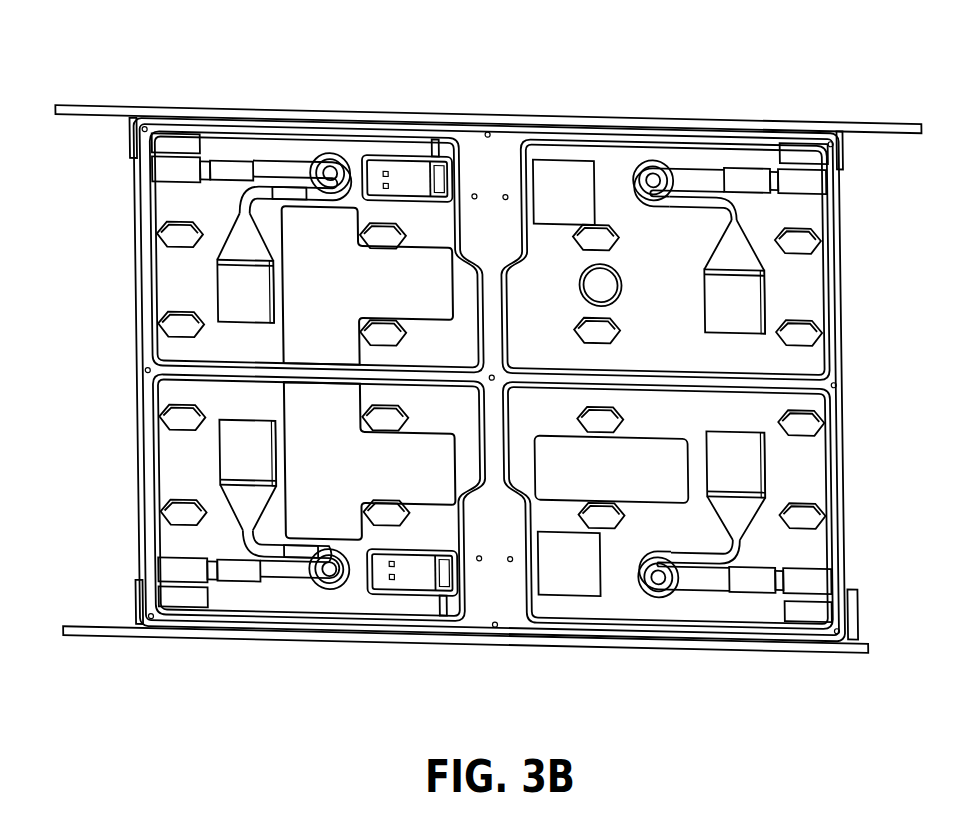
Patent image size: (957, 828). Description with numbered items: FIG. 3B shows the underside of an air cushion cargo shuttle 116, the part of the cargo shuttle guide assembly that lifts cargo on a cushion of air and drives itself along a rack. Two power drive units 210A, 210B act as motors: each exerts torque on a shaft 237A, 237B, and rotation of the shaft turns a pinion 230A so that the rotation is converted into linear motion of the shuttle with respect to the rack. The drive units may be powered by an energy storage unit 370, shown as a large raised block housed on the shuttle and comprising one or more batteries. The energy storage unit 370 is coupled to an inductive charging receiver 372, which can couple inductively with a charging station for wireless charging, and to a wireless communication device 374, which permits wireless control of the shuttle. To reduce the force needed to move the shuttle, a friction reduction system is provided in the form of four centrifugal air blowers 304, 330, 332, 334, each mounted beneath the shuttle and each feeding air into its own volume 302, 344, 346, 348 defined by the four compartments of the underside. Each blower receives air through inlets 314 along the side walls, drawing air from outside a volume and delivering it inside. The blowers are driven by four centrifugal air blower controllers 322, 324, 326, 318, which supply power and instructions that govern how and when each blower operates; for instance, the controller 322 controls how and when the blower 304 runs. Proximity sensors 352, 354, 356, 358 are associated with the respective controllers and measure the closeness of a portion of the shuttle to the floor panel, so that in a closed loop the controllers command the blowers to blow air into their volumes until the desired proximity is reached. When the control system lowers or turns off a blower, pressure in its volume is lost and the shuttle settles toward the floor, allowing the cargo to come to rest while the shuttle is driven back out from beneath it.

The air cushion cargo shuttle 116 is at (808, 484).
The power drive unit 210A is at (402, 178).
The power drive unit 210B is at (402, 573).
The pinion 230A is at (430, 112).
The shaft 237A is at (437, 140).
The shaft 237B is at (453, 603).
The volume 302 is at (608, 578).
The centrifugal air blower 304 is at (665, 595).
The inlets 314 is at (135, 183).
The centrifugal air blower controller 318 is at (745, 300).
The centrifugal air blower controller 322 is at (750, 442).
The centrifugal air blower controller 324 is at (245, 288).
The centrifugal air blower controller 326 is at (248, 456).
The centrifugal air blower 330 is at (322, 168).
The centrifugal air blower 332 is at (333, 595).
The centrifugal air blower 334 is at (652, 160).
The volume 344 is at (212, 205).
The volume 346 is at (215, 530).
The volume 348 is at (648, 260).
The proximity sensor 352 is at (802, 610).
The proximity sensor 354 is at (165, 133).
The proximity sensor 356 is at (180, 605).
The proximity sensor 358 is at (785, 150).
The energy storage unit 370 is at (310, 340).
The inductive charging receiver 372 is at (643, 458).
The wireless communication device 374 is at (598, 290).